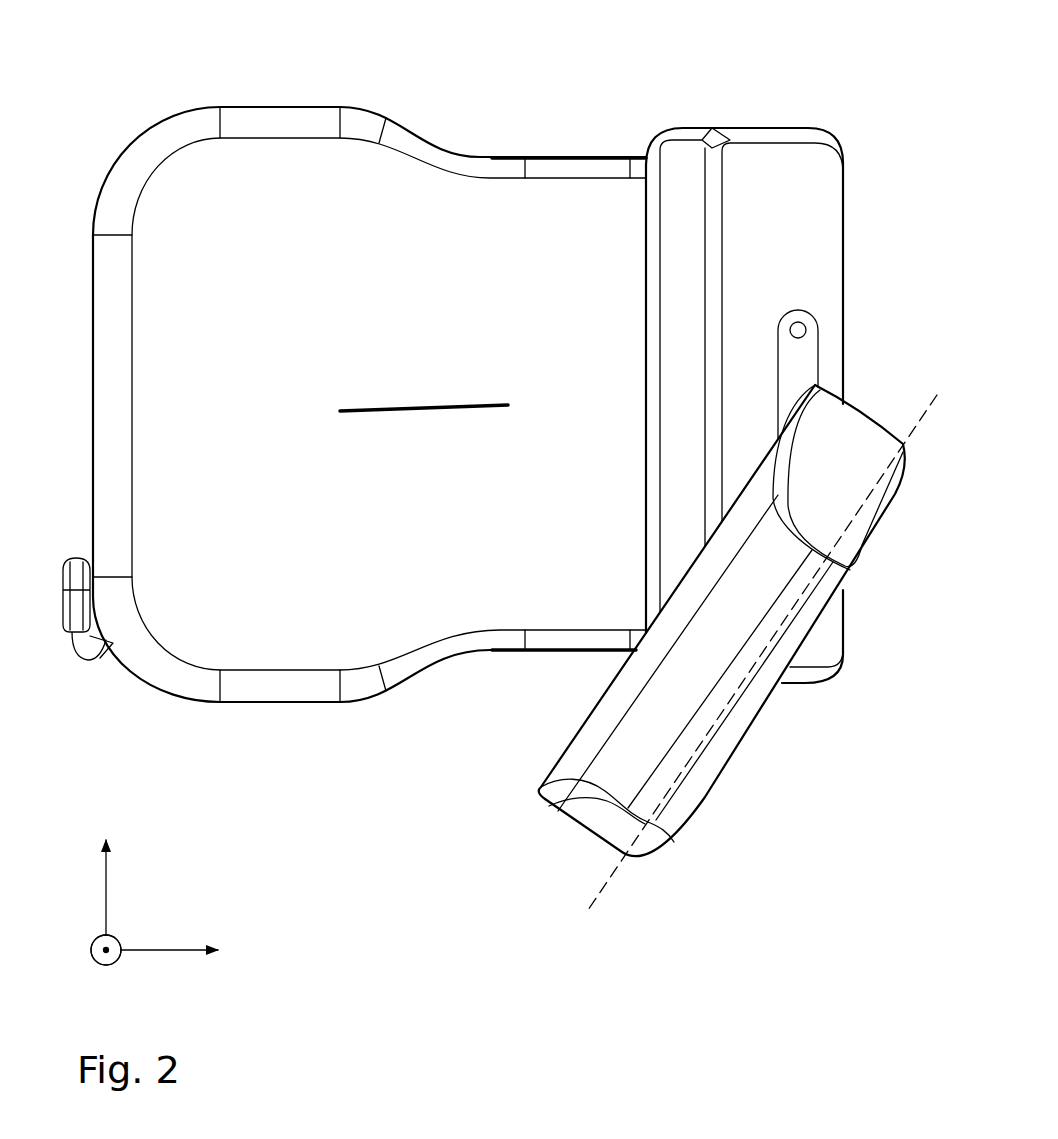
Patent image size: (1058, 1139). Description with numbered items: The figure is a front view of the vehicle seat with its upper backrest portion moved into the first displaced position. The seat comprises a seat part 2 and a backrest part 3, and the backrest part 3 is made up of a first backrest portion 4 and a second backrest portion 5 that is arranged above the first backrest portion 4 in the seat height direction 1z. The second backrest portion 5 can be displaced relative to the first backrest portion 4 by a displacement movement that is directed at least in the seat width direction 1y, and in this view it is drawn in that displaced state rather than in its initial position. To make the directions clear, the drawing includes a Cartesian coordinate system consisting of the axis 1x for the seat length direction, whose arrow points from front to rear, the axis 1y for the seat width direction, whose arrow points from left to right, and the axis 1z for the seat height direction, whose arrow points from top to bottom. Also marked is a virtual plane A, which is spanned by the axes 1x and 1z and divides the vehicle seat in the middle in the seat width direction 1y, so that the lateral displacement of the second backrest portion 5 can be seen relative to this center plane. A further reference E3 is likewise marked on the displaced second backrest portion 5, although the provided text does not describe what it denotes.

The seat part 2 is at (369, 108).
The backrest part 3 is at (783, 82).
The first backrest portion 4 is at (848, 162).
The second backrest portion 5 is at (716, 784).
The virtual plane A is at (430, 415).
The plane E3 is at (925, 402).
The axis in seat length direction 1x is at (167, 953).
The axis in seat width direction 1y is at (105, 898).
The axis in seat height direction 1z is at (107, 966).